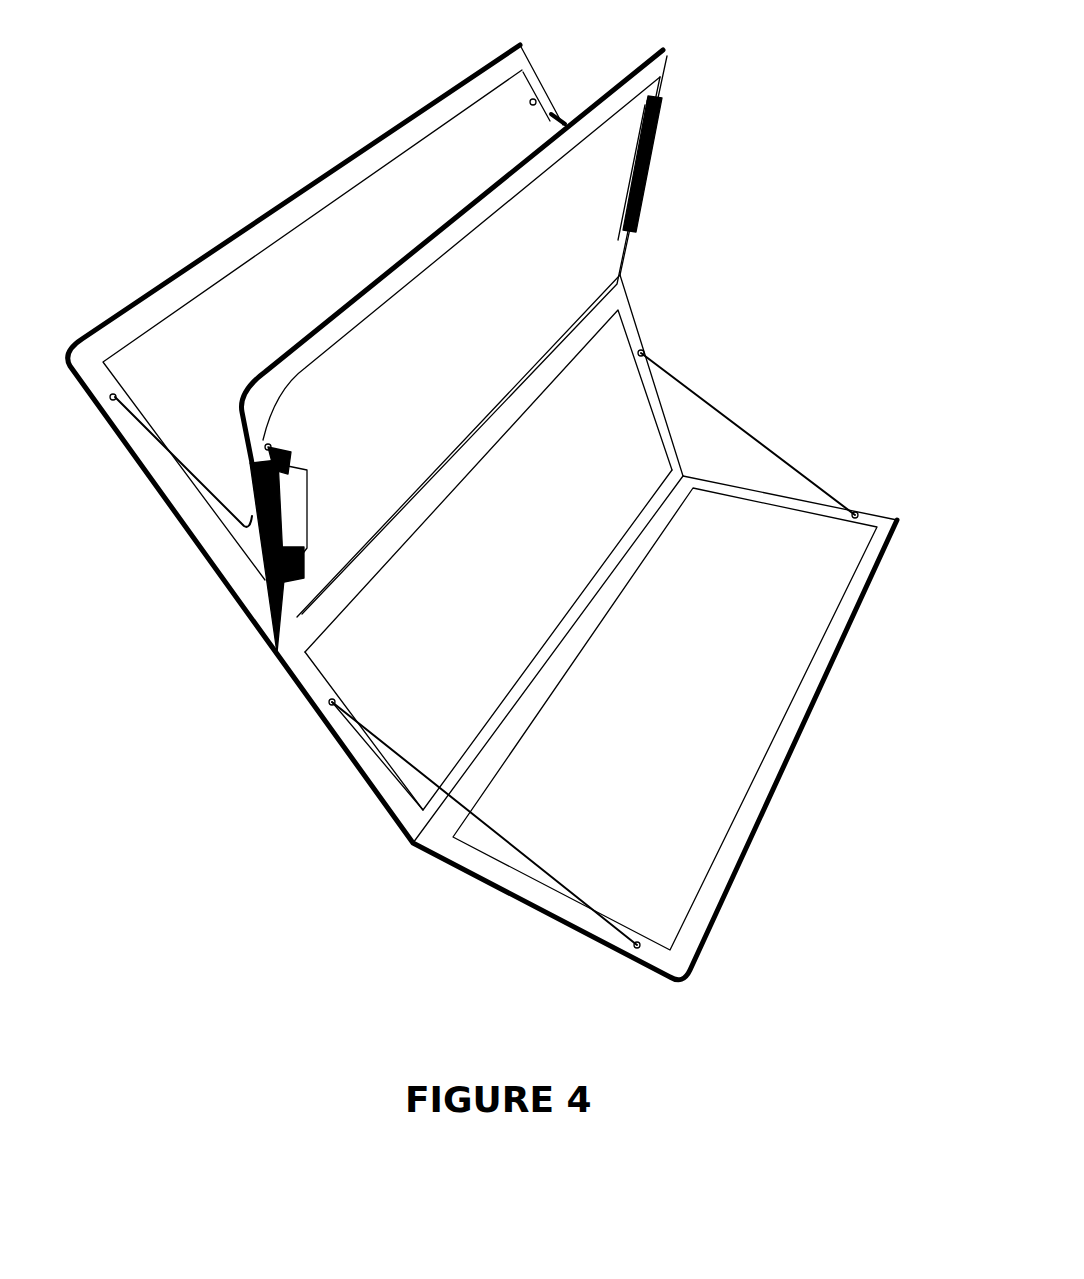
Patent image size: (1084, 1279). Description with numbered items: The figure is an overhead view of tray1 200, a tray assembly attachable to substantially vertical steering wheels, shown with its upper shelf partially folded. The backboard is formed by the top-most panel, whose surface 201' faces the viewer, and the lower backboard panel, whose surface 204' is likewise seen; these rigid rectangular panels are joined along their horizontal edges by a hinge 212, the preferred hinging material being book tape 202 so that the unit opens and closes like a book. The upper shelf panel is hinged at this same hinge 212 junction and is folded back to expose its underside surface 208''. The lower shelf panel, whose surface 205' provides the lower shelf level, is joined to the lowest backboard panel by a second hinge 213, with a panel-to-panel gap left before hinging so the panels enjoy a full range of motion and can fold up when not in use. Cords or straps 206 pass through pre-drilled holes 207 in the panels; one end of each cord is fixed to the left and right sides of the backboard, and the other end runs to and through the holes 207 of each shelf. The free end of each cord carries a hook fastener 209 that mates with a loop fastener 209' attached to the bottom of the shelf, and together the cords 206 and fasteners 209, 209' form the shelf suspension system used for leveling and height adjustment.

The tray1 200 is at (751, 102).
The top-most panel surface 201' is at (333, 312).
The book tape 202 is at (285, 222).
The lower backboard panel surface 204' is at (488, 640).
The lower shelf panel surface 205' is at (645, 713).
The cord 206 is at (547, 118).
The pre-drilled hole 207 is at (535, 103).
The underside surface of upper shelf panel 208'' is at (462, 351).
The hook fastener 209 is at (457, 343).
The loop fastener 209' is at (451, 374).
The hinge 212 is at (277, 652).
The hinge 213 is at (412, 848).